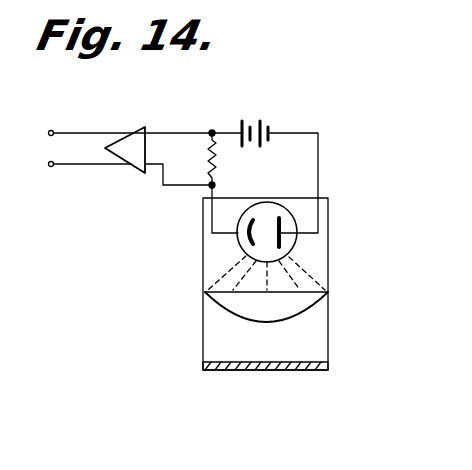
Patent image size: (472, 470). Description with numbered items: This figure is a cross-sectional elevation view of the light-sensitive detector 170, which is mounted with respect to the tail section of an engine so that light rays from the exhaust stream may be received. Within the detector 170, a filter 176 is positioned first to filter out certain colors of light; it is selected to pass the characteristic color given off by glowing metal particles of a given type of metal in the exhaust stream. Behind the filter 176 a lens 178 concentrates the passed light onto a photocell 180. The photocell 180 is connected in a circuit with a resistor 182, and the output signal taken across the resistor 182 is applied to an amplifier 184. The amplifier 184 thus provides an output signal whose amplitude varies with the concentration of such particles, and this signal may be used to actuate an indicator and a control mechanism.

The light-sensitive detector 170 is at (334, 222).
The filter 176 is at (316, 361).
The lens 178 is at (306, 301).
The photocell 180 is at (273, 203).
The resistor 182 is at (220, 159).
The amplifier 184 is at (137, 128).